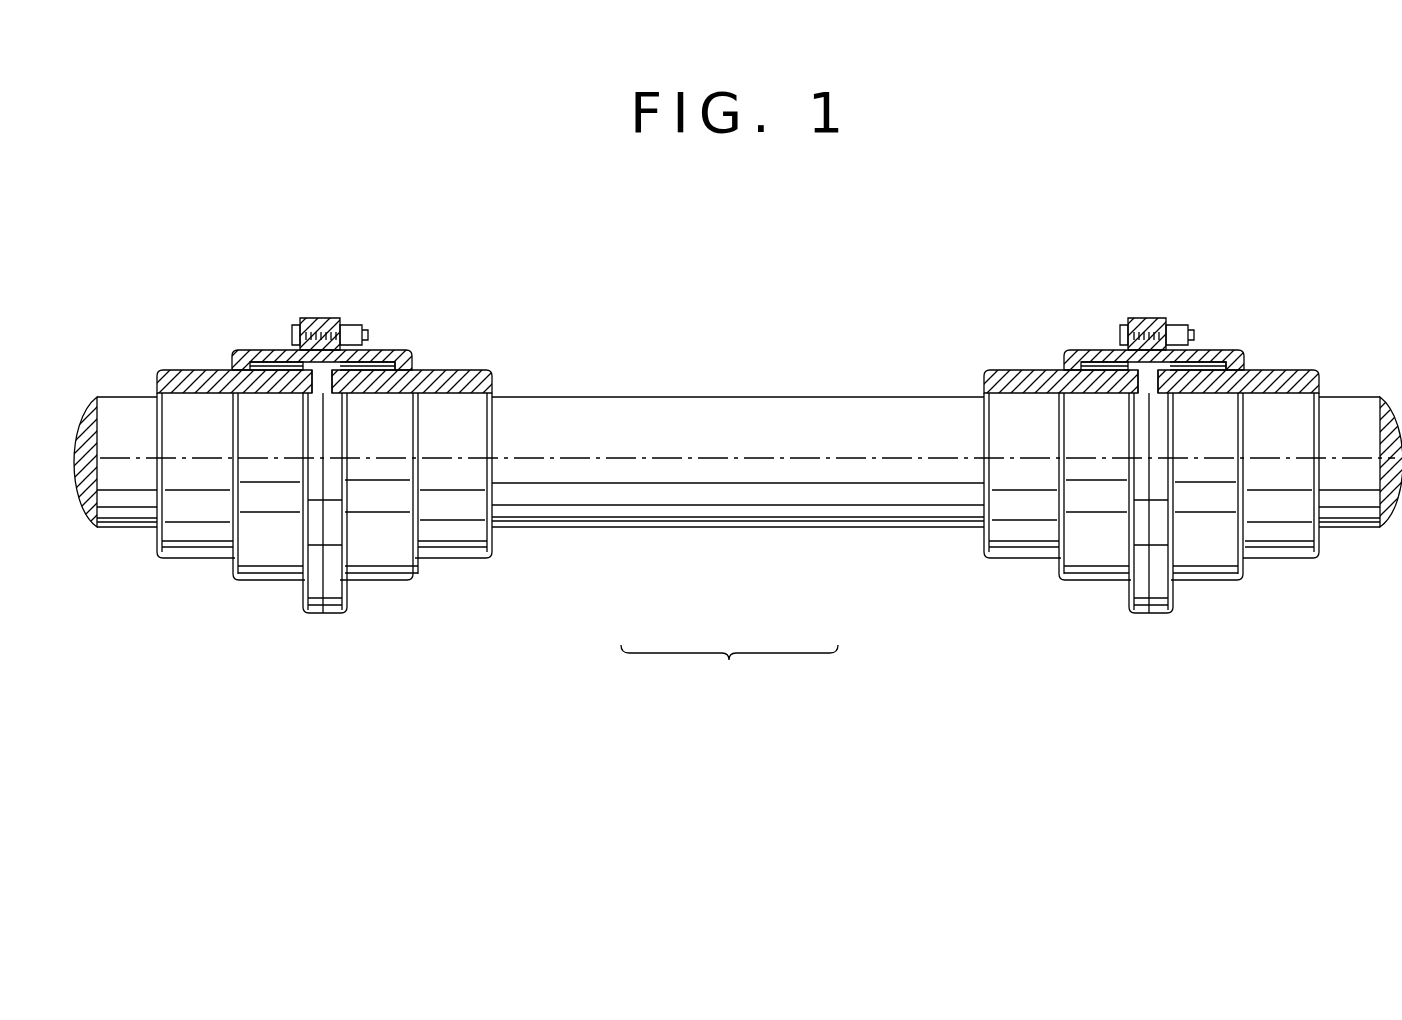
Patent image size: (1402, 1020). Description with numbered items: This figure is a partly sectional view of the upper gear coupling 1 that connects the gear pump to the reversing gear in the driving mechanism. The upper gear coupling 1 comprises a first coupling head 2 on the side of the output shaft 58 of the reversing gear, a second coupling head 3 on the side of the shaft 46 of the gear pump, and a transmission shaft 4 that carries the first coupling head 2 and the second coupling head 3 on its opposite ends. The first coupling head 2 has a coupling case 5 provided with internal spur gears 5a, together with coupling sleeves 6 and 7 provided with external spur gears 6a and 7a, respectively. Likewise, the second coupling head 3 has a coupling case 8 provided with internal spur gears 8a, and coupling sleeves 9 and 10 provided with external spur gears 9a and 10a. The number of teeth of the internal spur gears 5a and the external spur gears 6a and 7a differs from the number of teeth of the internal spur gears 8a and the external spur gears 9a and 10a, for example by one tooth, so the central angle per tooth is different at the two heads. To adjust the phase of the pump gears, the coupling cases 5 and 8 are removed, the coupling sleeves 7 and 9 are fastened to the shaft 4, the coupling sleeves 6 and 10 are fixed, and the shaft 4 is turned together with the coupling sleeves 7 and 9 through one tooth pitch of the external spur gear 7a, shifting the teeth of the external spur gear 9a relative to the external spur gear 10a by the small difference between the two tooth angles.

The upper gear coupling 1 is at (729, 676).
The first coupling head 2 is at (398, 450).
The second coupling head 3 is at (1077, 450).
The transmission shaft 4 is at (725, 529).
The coupling case 5 is at (337, 311).
The internal spur gears 5a is at (270, 362).
The coupling sleeve 6 is at (196, 357).
The external spur gear 6a is at (272, 372).
The coupling sleeve 7 is at (464, 359).
The external spur gear 7a is at (372, 372).
The coupling case 8 is at (1165, 311).
The internal spur gears 8a is at (1098, 362).
The coupling sleeve 9 is at (1015, 357).
The external spur gear 9a is at (1104, 372).
The coupling sleeve 10 is at (1305, 359).
The external spur gear 10a is at (1195, 372).
The shaft 46 is at (1350, 530).
The output shaft 58 is at (112, 530).